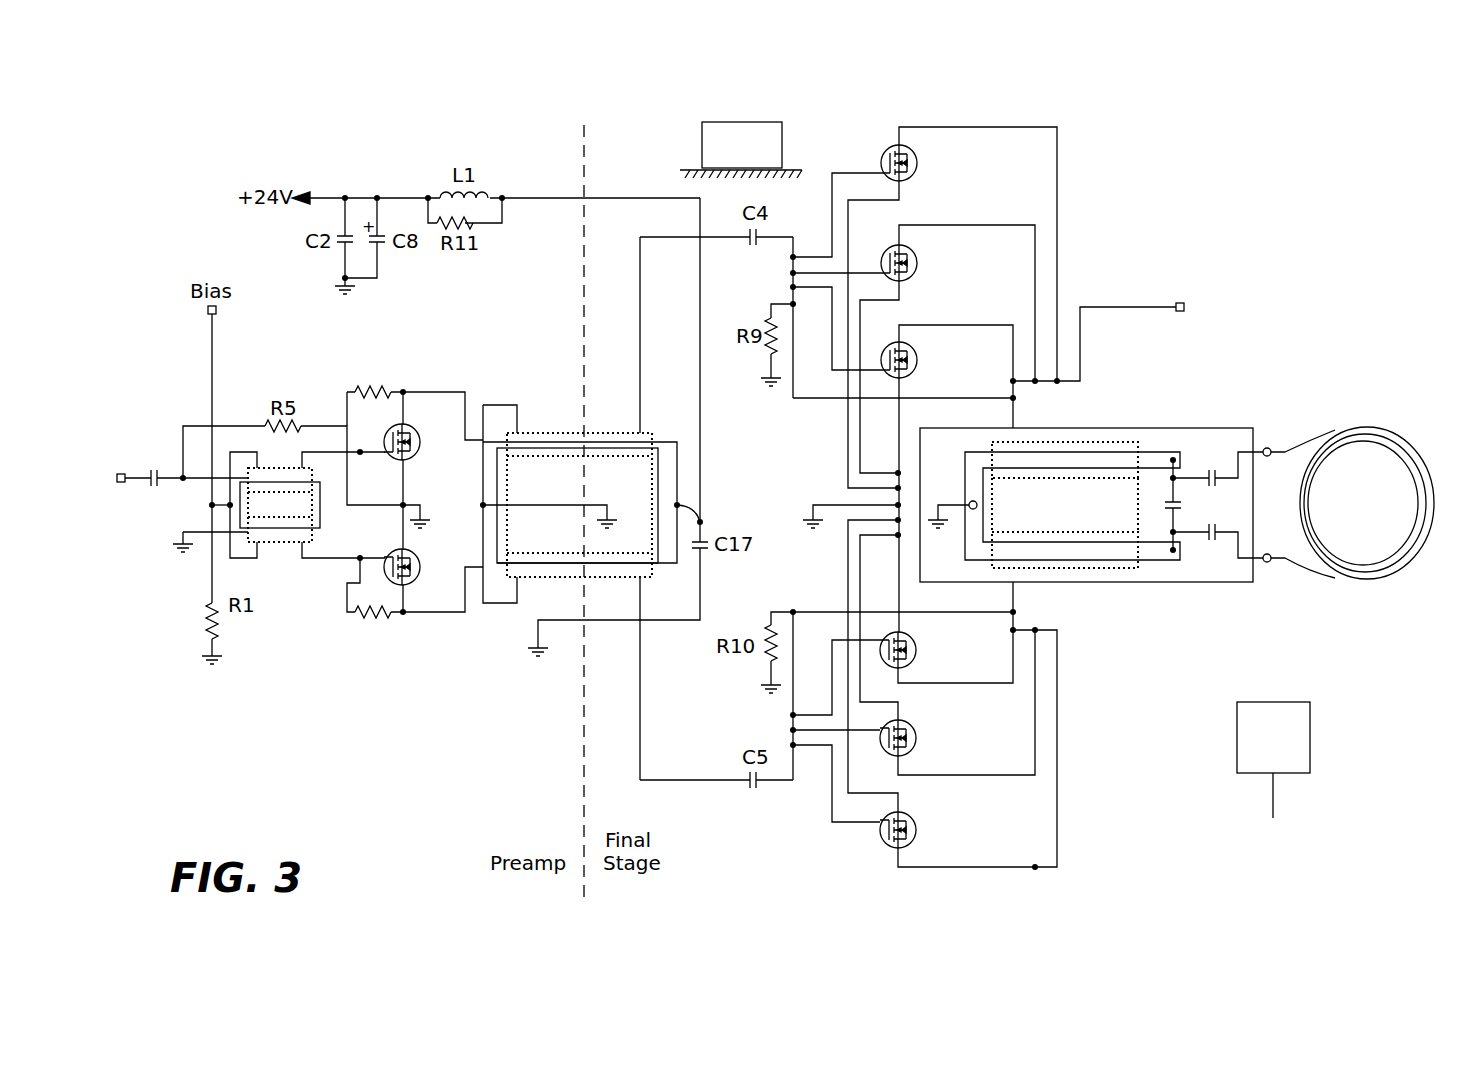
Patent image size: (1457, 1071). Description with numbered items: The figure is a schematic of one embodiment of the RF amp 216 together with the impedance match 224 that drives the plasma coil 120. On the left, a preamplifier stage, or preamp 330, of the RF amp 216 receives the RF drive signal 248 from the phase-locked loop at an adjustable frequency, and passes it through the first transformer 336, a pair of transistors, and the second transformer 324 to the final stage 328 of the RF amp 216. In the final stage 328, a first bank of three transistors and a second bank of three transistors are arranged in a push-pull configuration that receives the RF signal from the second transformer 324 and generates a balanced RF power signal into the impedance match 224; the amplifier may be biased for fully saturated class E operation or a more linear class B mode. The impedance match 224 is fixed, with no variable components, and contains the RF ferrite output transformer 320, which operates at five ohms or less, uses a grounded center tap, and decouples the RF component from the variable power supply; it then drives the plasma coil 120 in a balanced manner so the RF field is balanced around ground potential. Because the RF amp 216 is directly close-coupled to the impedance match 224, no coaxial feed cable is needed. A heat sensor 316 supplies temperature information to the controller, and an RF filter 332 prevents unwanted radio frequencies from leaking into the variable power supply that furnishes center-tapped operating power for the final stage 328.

The RF amp 216 is at (1116, 126).
The heat sensor 316 is at (702, 141).
The RF drive signal 248 is at (122, 472).
The transformer 1 (T1) 336 is at (307, 508).
The transformer 2 (T2) 324 is at (590, 504).
The T3 320 is at (1082, 562).
The impedance match 224 is at (1091, 562).
The plasma coil 120 is at (1350, 427).
The RF filter 332 is at (1258, 702).
The preamplifier stage (preamp) 330 is at (440, 850).
The final stage 328 is at (710, 850).